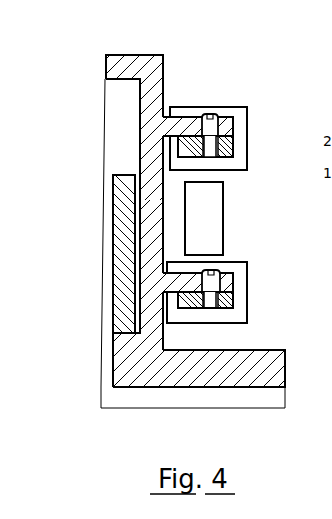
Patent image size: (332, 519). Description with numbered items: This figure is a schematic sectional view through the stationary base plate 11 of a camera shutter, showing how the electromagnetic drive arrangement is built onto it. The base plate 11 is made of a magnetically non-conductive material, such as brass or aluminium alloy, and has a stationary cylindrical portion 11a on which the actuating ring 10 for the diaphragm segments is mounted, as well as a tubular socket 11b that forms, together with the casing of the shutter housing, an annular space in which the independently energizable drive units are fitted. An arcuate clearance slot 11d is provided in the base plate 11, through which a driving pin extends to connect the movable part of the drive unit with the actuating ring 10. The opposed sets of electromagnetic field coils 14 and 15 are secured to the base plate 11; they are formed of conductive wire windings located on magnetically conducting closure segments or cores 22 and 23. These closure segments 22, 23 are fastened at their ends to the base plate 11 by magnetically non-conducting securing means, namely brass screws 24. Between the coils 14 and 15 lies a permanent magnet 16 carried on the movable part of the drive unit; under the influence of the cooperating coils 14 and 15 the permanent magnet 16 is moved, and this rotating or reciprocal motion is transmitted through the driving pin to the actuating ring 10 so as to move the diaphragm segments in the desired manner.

The actuating ring 10 is at (123, 207).
The base plate 11 is at (166, 200).
The cylindrical portion 11a is at (133, 354).
The tubular socket 11b is at (255, 368).
The arcuate clearance slot 11d is at (233, 122).
The electromagnetic field coil 14 is at (247, 160).
The electromagnetic field coil 15 is at (247, 321).
The permanent magnet 16 is at (228, 231).
The closure segment 22 is at (233, 142).
The closure segment 23 is at (233, 303).
The brass screw 24 is at (213, 116).